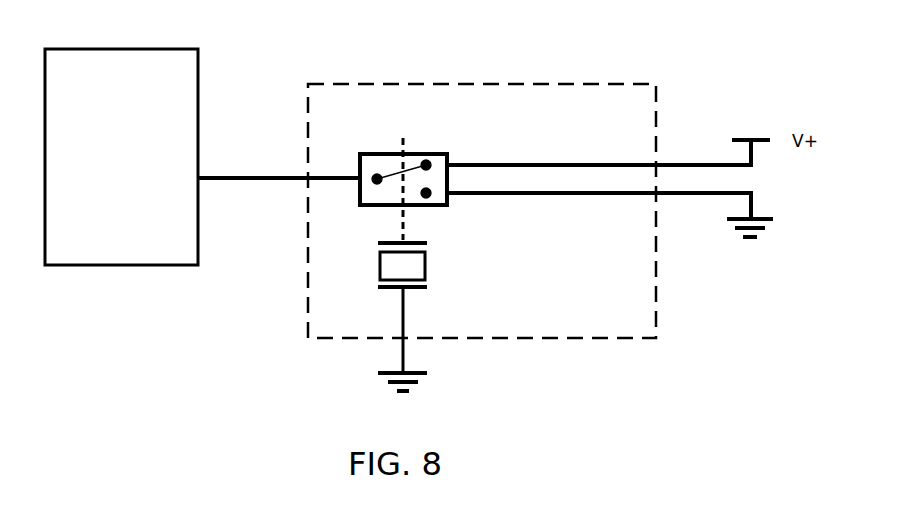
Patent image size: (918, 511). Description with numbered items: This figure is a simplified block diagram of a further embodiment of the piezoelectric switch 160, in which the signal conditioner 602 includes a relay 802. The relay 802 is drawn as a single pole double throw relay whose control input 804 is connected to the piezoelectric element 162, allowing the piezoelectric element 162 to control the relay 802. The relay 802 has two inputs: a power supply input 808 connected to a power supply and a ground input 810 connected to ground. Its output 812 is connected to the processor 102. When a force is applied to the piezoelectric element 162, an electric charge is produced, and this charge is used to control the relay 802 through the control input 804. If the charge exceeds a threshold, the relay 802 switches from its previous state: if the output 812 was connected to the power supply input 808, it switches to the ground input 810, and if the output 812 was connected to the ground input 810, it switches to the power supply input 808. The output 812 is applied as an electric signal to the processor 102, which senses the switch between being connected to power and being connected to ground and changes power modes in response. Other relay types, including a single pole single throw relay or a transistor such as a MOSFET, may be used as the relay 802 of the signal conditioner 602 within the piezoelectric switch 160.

The processor 102 is at (106, 177).
The piezoelectric switch 160 is at (466, 135).
The piezoelectric element 162 is at (377, 251).
The signal conditioner 602 is at (362, 153).
The relay 802 is at (423, 207).
The control input 804 is at (395, 183).
The power supply input 808 is at (427, 153).
The ground input 810 is at (433, 198).
The output 812 is at (377, 179).